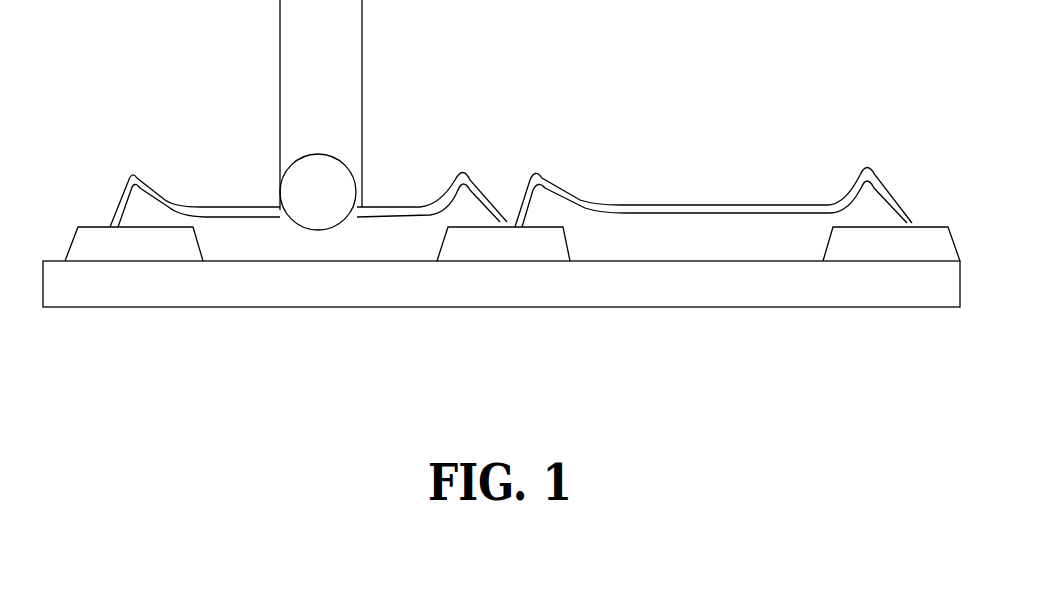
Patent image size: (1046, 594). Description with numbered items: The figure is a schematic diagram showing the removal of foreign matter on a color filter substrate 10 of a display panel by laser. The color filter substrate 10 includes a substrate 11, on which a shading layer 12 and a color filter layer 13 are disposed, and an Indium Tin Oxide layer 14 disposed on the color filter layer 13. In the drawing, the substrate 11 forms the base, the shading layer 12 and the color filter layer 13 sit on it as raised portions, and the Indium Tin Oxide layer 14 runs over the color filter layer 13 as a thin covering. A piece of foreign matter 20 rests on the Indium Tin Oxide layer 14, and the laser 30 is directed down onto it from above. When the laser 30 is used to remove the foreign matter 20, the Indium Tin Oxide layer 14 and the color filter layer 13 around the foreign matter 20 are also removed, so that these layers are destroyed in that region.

The color filter substrate 10 is at (567, 132).
The substrate 11 is at (463, 297).
The shading layer 12 is at (88, 235).
The color filter layer 13 is at (227, 245).
The Indium Tin Oxide layer 14 is at (187, 207).
The foreign matter 20 is at (355, 198).
The laser 30 is at (350, 40).